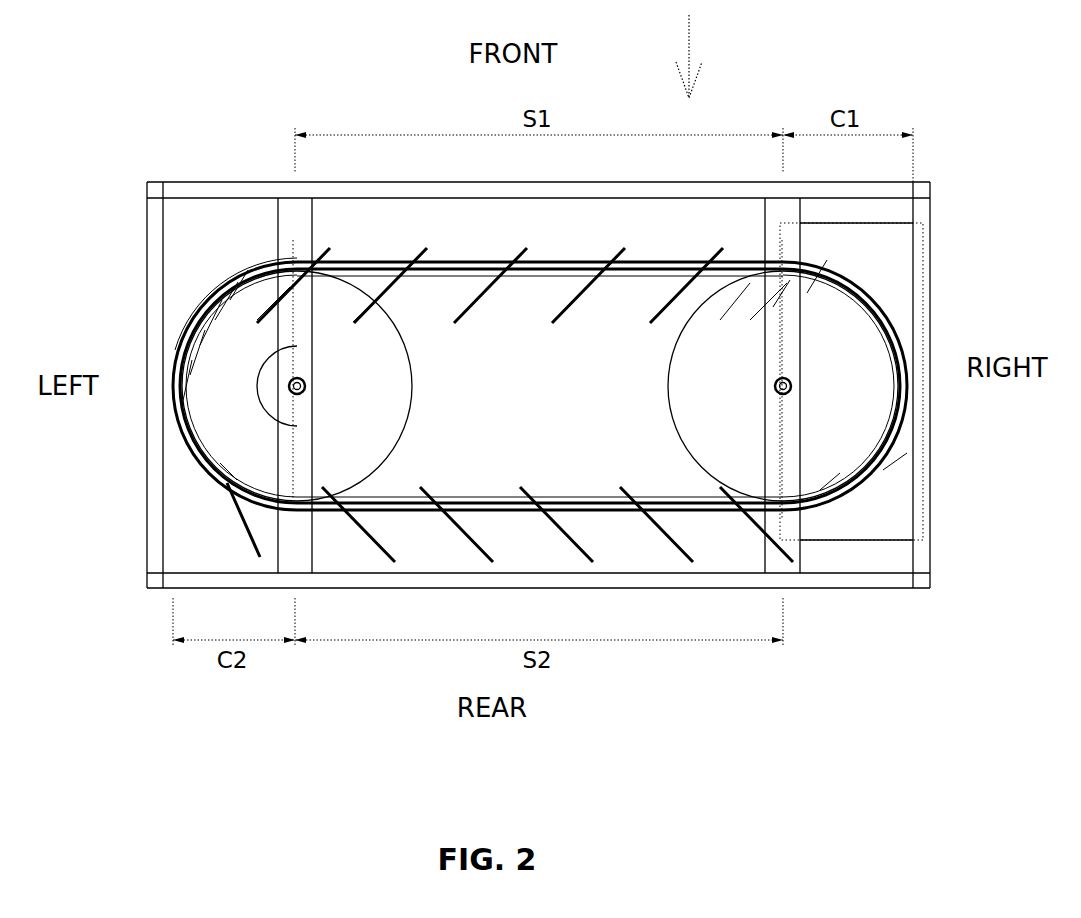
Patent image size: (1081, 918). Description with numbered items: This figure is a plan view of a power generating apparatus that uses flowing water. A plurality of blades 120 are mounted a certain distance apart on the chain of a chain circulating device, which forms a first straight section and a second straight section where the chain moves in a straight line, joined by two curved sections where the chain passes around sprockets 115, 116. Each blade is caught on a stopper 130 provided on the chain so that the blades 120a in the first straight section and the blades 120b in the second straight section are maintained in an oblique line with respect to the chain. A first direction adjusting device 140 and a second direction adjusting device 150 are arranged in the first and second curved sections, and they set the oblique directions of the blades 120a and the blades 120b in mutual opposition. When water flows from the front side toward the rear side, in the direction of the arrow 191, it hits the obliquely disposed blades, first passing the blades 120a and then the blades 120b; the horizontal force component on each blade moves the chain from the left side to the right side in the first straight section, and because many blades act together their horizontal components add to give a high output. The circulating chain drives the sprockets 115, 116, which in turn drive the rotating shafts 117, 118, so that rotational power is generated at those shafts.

The sprocket 115 is at (669, 344).
The sprocket 116 is at (411, 402).
The rotating shaft 117 is at (791, 368).
The rotating shaft 118 is at (314, 392).
The blade 120 is at (540, 391).
The blade in the first straight section 120a is at (480, 278).
The blade in the second straight section 120b is at (593, 520).
The stopper 130 is at (435, 290).
The first direction adjusting device 140 is at (858, 540).
The second direction adjusting device 150 is at (245, 258).
The arrow 191 is at (692, 46).